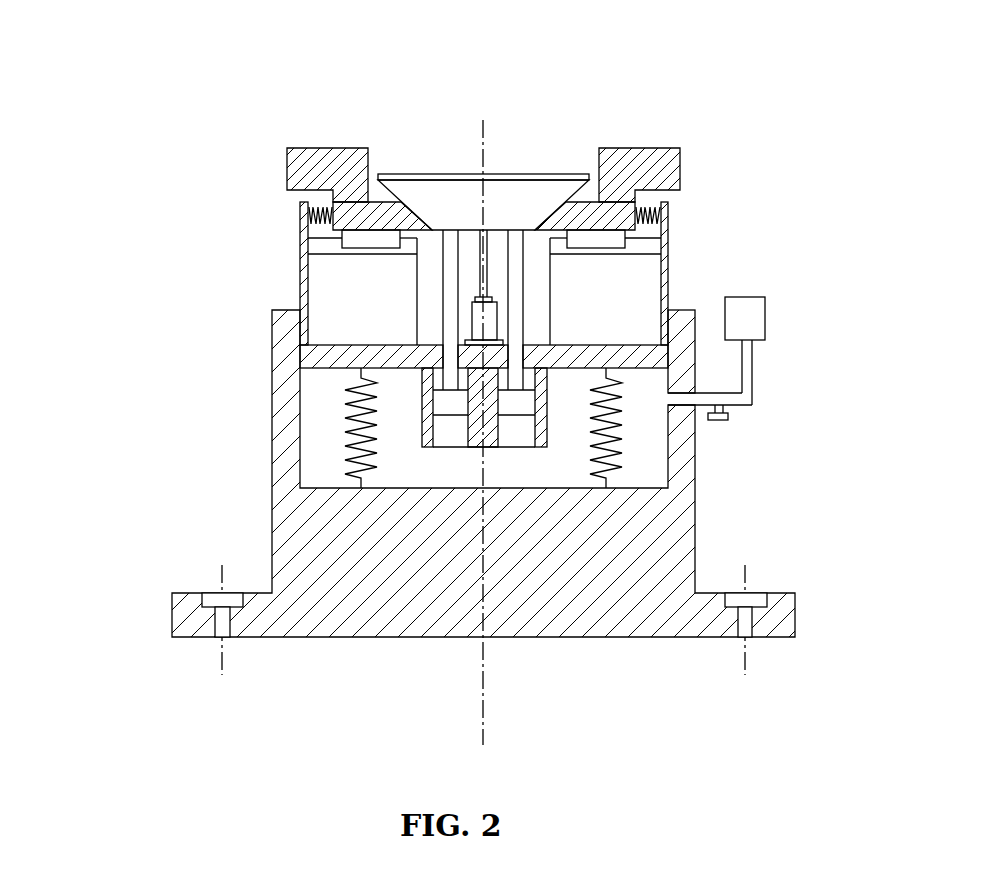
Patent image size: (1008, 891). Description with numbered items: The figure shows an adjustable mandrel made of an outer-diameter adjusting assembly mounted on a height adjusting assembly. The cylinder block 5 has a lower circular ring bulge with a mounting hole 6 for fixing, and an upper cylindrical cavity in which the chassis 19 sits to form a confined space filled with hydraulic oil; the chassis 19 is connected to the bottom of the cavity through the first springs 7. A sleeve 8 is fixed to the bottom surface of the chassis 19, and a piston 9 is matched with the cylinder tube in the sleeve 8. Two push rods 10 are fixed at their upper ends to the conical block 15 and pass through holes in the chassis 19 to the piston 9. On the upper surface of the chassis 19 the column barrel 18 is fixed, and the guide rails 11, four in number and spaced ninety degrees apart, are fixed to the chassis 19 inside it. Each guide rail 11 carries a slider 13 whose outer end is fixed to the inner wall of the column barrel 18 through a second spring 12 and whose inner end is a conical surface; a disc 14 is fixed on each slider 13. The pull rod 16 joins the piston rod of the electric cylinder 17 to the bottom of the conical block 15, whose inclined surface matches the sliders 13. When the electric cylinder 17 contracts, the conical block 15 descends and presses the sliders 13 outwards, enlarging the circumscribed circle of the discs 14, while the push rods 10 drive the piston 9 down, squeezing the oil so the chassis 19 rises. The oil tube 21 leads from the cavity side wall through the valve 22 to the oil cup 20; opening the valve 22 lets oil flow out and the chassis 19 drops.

The cylinder block 5 is at (188, 623).
The mounting hole 6 is at (215, 595).
The first spring 7 is at (345, 462).
The sleeve 8 is at (425, 437).
The piston 9 is at (445, 400).
The push rod 10 is at (447, 330).
The guide rail 11 is at (321, 247).
The second spring 12 is at (304, 208).
The slider 13 is at (364, 207).
The disc 14 is at (335, 148).
The conical block 15 is at (522, 193).
The pull rod 16 is at (488, 258).
The electric cylinder 17 is at (485, 315).
The column barrel 18 is at (669, 263).
The chassis 19 is at (563, 357).
The oil cup 20 is at (758, 310).
The oil pipe 21 is at (753, 365).
The valve 22 is at (732, 415).